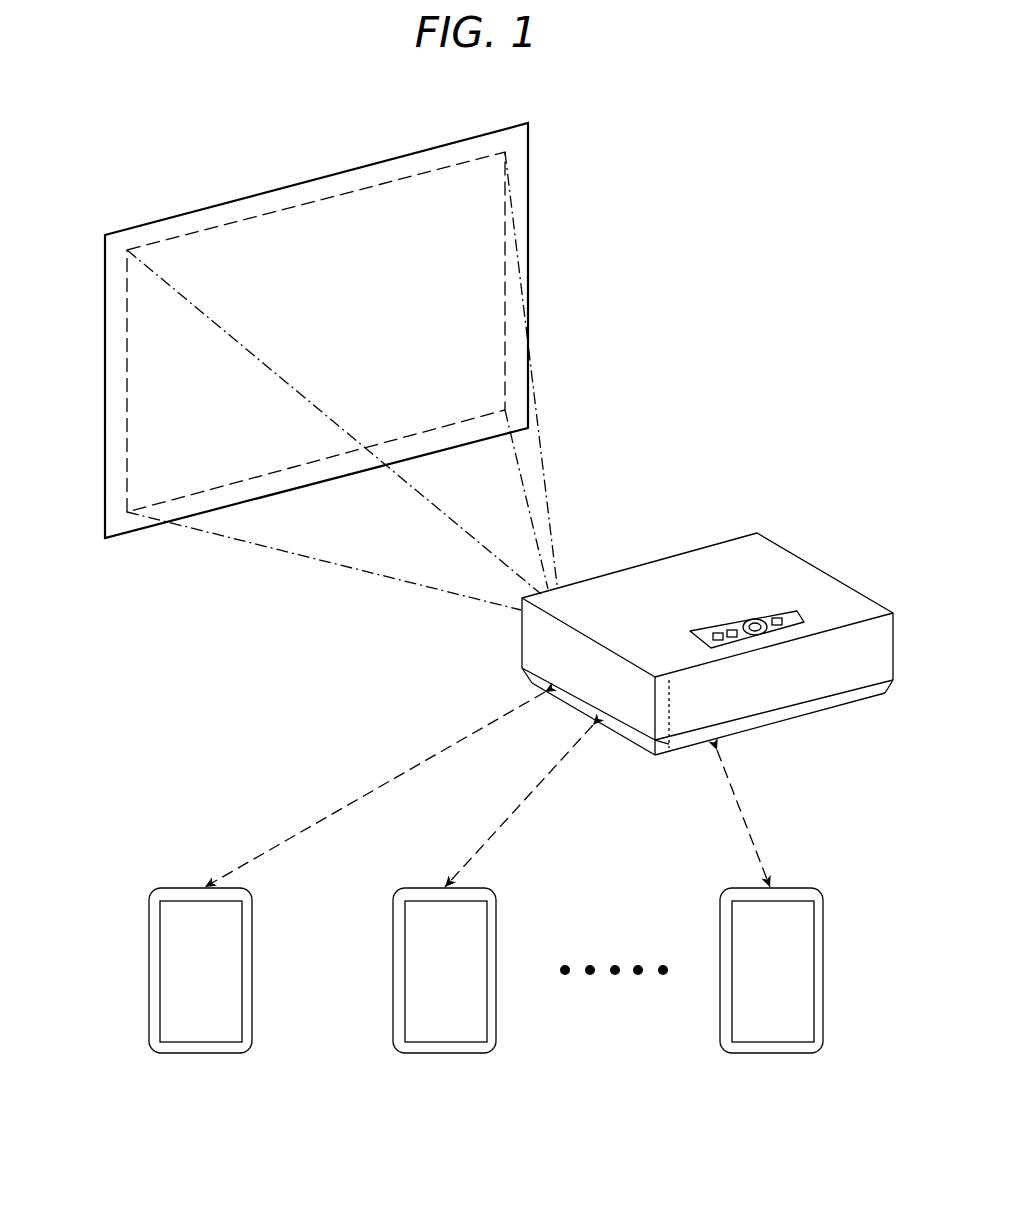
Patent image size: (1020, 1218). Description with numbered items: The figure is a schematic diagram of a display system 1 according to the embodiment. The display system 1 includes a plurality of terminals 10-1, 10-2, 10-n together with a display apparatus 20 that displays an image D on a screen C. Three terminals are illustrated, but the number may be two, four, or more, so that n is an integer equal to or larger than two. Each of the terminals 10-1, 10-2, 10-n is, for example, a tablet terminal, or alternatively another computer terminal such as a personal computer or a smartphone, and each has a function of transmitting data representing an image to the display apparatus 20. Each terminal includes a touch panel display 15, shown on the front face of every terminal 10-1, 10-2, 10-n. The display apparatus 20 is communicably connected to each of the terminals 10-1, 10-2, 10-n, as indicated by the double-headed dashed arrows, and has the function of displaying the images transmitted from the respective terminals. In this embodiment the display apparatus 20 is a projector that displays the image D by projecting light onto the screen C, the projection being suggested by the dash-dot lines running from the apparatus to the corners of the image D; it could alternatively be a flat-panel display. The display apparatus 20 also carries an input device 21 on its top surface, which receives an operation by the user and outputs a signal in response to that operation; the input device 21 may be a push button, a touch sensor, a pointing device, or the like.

The display system 1 is at (782, 465).
The display apparatus 20 is at (773, 557).
The input device 21 is at (780, 608).
The screen C is at (113, 324).
The image D is at (372, 186).
The touch panel display 15 is at (241, 932).
The first terminal 10-1 is at (202, 1053).
The second terminal 10-2 is at (449, 1053).
The nth terminal 10-n is at (774, 1053).